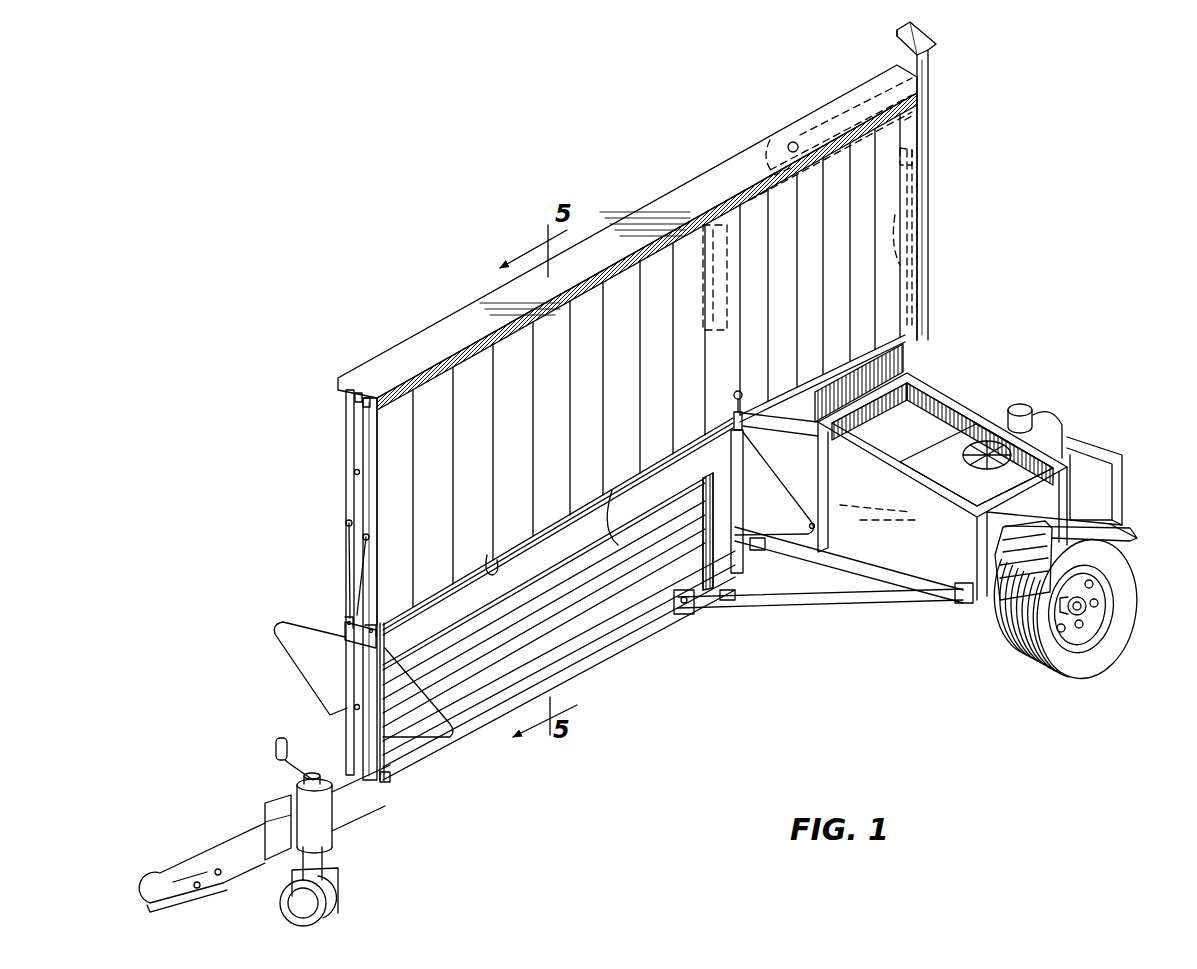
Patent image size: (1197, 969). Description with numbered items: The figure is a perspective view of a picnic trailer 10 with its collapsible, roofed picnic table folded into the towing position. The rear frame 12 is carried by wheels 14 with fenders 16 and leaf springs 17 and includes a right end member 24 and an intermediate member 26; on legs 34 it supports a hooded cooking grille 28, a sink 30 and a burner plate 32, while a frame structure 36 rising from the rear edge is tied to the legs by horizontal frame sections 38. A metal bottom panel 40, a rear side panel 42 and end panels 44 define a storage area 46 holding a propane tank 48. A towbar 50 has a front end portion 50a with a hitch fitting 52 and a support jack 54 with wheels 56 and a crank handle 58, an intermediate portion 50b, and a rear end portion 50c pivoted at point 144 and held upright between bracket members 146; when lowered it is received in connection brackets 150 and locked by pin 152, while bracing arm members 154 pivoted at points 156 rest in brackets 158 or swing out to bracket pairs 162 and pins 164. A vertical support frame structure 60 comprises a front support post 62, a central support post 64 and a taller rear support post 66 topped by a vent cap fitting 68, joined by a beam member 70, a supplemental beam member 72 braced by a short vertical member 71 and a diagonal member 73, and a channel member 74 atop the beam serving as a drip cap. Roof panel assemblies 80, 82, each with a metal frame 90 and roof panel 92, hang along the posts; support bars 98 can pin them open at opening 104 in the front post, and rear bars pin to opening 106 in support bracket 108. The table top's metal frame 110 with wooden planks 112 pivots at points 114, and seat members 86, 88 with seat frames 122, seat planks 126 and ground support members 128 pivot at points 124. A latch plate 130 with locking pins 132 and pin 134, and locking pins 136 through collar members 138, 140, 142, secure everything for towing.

The picnic trailer 10 is at (370, 300).
The rear frame 12 is at (877, 565).
The wheels 14 is at (1079, 609).
The fenders 16 is at (1137, 535).
The leaf springs 17 is at (995, 622).
The right end member 24 is at (1099, 545).
The intermediate member 26 is at (885, 519).
The hooded cooking grille 28 is at (905, 345).
The sink 30 is at (944, 471).
The burner plate 32 is at (976, 431).
The support legs 34 is at (800, 456).
The frame structure 36 is at (1077, 464).
The horizontal frame sections 38 is at (1105, 445).
The metal bottom panel 40 is at (975, 510).
The rear side panel 42 is at (965, 395).
The end panels 44 is at (1110, 500).
The storage area 46 is at (1027, 405).
The propane tank 48 is at (1050, 415).
The towbar 50 is at (566, 705).
The front end portion 50a is at (232, 842).
The longitudinally intermediate portion 50b is at (660, 635).
The rear end portion 50c is at (849, 565).
The hitch fitting 52 is at (153, 870).
The support jack 54 is at (334, 820).
The wheels 56 is at (283, 905).
The crank handle 58 is at (275, 757).
The vertical support frame structure 60 is at (967, 179).
The vertical front support post 62 is at (347, 680).
The vertical central support post 64 is at (662, 213).
The vertical rear support post 66 is at (930, 230).
The vent cap fitting 68 is at (933, 40).
The beam member 70 is at (838, 103).
The short vertical member 71 is at (768, 140).
The supplemental horizontal beam member 72 is at (932, 128).
The diagonal support member 73 is at (920, 262).
The channel member 74 is at (672, 183).
The roof panel assembly 80 is at (342, 585).
The roof panel assembly 82 is at (380, 460).
The seat member 86 is at (345, 707).
The seat member 88 is at (400, 757).
The metal frame 90 is at (346, 490).
The roof panel 92 is at (634, 372).
The support bars 98 is at (355, 565).
The opening 104 is at (352, 472).
The opening 106 is at (930, 180).
The support bracket 108 is at (930, 152).
The metal frame 110 is at (556, 599).
The wooden planks 112 is at (602, 645).
The pivot points 114 is at (352, 712).
The seat frame 122 is at (487, 556).
The pivot points 124 is at (378, 785).
The seat planks 126 is at (613, 490).
The ground support members 128 is at (282, 622).
The latch plate 130 is at (347, 642).
The locking pins 132 is at (345, 625).
The pin 134 is at (288, 635).
The locking pins 136 is at (740, 390).
The collar members 138 is at (733, 405).
The collar members 140 is at (731, 430).
The collar members 142 is at (775, 405).
The pivot point 144 is at (770, 600).
The bracket members 146 is at (702, 460).
The connection brackets 150 is at (782, 508).
The locking pin 152 is at (765, 550).
The bracing arm members 154 is at (885, 612).
The pivot points 156 is at (690, 616).
The brackets 158 is at (470, 755).
The bracket pairs 162 is at (938, 648).
The pins 164 is at (945, 592).